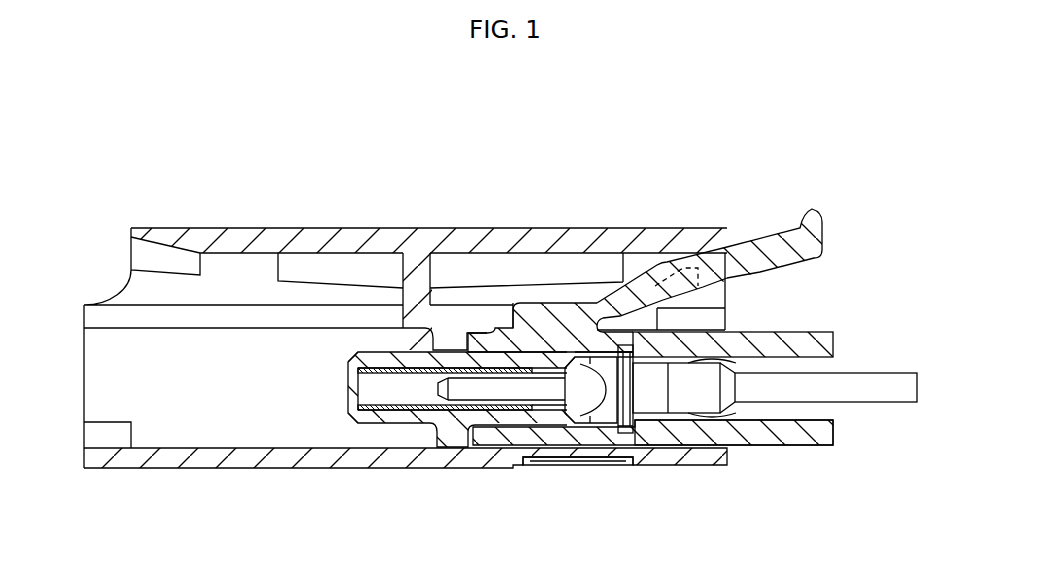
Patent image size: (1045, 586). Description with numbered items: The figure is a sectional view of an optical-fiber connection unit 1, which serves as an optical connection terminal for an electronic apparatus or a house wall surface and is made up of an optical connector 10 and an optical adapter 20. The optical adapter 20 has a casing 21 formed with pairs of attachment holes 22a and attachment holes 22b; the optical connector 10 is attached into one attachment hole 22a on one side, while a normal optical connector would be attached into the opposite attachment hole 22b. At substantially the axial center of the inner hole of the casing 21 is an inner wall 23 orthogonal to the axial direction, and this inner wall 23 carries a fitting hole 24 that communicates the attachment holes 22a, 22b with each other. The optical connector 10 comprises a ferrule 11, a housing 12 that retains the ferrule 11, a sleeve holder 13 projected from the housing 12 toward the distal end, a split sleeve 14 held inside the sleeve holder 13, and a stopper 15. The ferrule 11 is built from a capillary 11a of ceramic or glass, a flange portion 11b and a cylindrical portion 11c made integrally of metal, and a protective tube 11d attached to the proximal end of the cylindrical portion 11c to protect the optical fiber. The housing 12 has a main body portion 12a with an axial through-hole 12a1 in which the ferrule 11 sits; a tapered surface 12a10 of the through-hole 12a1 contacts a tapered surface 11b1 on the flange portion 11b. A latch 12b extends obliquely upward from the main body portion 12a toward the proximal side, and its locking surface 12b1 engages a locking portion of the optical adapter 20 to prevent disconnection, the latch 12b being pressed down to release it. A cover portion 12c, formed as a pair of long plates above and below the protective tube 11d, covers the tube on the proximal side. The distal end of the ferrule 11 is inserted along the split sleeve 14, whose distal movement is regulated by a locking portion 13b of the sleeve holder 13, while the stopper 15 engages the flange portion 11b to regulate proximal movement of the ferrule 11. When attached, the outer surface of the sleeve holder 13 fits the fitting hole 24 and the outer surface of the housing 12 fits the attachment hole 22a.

The optical-fiber connection unit 1 is at (676, 182).
The optical connector 10 is at (810, 316).
The ferrule 11 is at (545, 400).
The capillary 11a is at (475, 390).
The flange portion 11b is at (601, 410).
The tapered surface 11b1 is at (570, 412).
The cylindrical portion 11c is at (653, 388).
The protective tube 11d is at (873, 393).
The housing 12 is at (554, 305).
The main body portion 12a is at (653, 343).
The through-hole 12a1 is at (722, 365).
The tapered surface 12a10 is at (592, 355).
The latch 12b is at (777, 247).
The locking surface 12b1 is at (698, 282).
The cover portion 12c is at (812, 344).
The sleeve holder 13 is at (420, 357).
The locking portion 13b is at (347, 400).
The split sleeve 14 is at (372, 410).
The stopper 15 is at (631, 398).
The optical adapter 20 is at (334, 222).
The casing 21 is at (252, 228).
The attachment hole 22a is at (704, 440).
The attachment hole 22b is at (186, 437).
The inner wall 23 is at (452, 340).
The fitting hole 24 is at (433, 430).